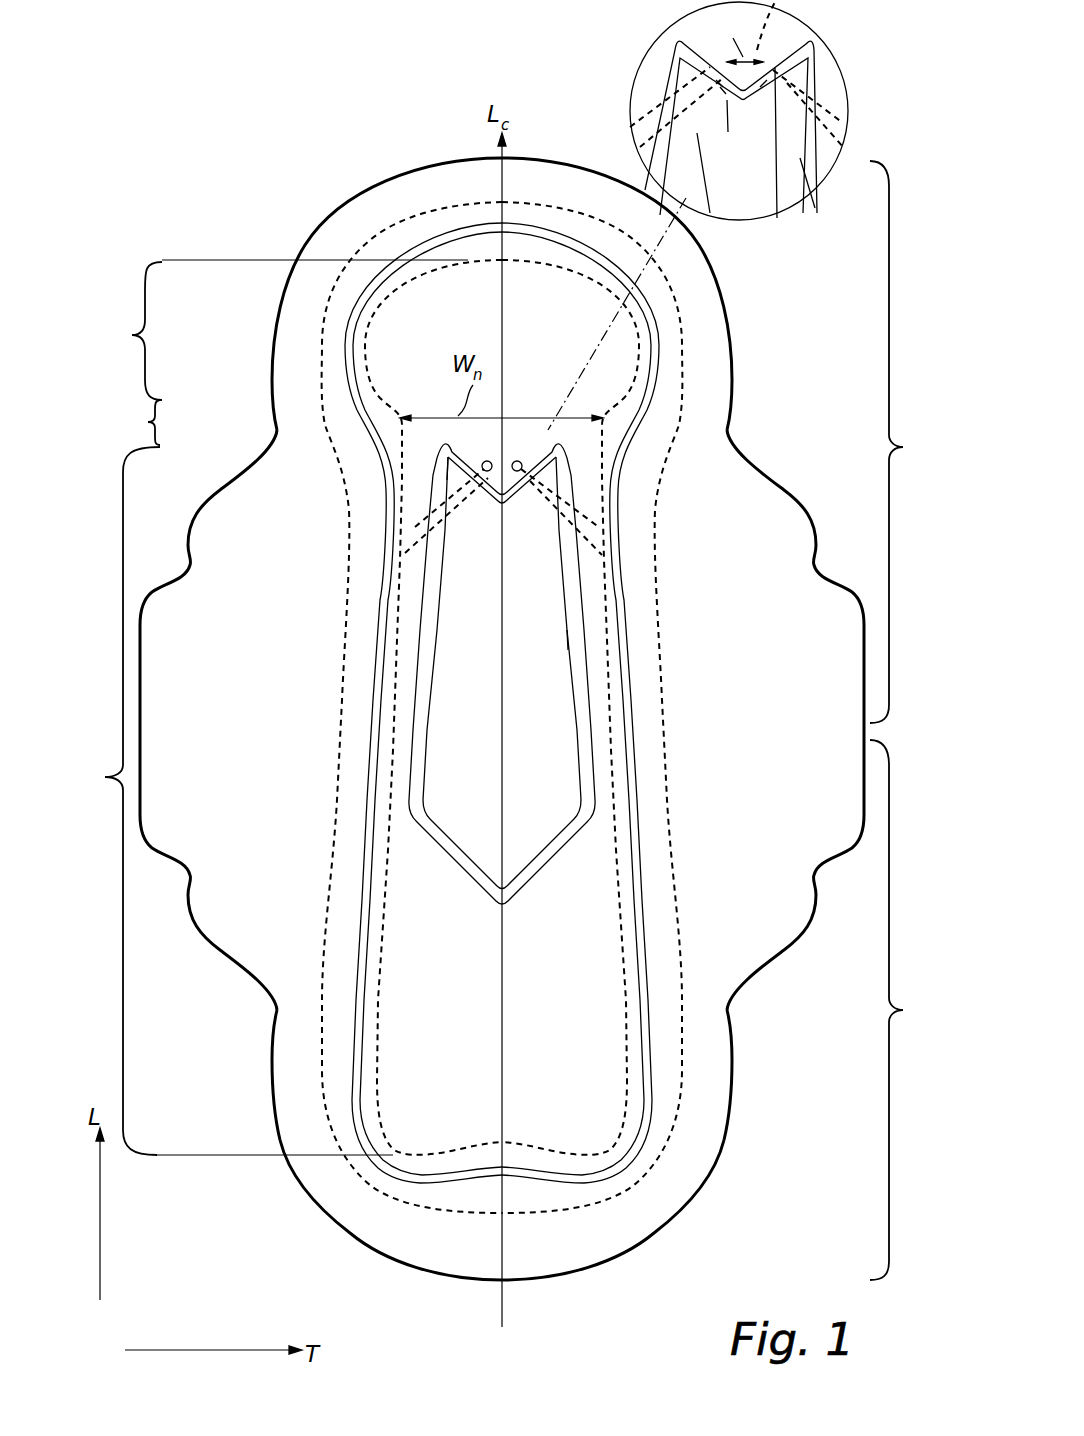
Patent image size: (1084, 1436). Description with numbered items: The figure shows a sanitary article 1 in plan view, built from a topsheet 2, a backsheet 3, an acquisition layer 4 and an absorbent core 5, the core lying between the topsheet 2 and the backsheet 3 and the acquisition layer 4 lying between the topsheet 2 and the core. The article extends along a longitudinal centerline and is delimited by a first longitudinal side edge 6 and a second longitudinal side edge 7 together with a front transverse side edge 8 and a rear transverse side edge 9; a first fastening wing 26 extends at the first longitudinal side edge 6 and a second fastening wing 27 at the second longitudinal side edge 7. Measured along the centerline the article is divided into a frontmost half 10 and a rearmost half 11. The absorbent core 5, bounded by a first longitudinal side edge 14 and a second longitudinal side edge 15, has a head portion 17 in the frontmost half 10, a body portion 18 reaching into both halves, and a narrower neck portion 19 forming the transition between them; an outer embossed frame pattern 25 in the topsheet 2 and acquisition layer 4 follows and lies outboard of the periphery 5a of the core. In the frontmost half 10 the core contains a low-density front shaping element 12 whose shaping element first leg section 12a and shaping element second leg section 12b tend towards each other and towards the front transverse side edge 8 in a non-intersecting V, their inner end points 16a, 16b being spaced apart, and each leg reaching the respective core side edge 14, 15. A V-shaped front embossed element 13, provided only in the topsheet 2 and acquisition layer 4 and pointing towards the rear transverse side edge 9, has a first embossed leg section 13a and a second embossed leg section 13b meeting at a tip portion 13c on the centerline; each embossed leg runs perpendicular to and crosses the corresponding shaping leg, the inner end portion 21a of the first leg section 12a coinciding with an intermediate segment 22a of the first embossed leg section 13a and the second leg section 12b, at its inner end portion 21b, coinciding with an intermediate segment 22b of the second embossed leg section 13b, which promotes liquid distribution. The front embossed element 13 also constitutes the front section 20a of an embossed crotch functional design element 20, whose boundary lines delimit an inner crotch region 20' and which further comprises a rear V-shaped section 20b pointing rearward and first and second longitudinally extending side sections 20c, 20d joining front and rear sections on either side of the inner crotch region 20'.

The sanitary article 1 is at (855, 311).
The topsheet 2 is at (534, 732).
The backsheet 3 is at (685, 447).
The acquisition layer 4 is at (673, 374).
The absorbent core 5 is at (573, 719).
The periphery of the absorbent core 5a is at (627, 1123).
The first longitudinal side edge 6 is at (729, 1017).
The second longitudinal side edge 7 is at (273, 1052).
The front transverse side edge 8 is at (462, 157).
The rear transverse side edge 9 is at (520, 1281).
The frontmost half 10 is at (903, 442).
The rearmost half 11 is at (903, 1010).
The low-density front shaping element 12 is at (738, 131).
The shaping element first leg section 12a is at (805, 78).
The shaping element second leg section 12b is at (415, 527).
The V-shaped front embossed element 13 is at (526, 359).
The first embossed leg section 13a is at (516, 505).
The second embossed leg section 13b is at (472, 488).
The tip portion 13c is at (495, 508).
The first longitudinal side edge of the absorbent core 14 is at (612, 658).
The second longitudinal side edge of the absorbent core 15 is at (395, 663).
The inner end point of the shaping element first leg section 16a is at (778, 4).
The inner end point of the shaping element second leg section 16b is at (710, 32).
The head portion 17 is at (123, 331).
The body portion 18 is at (110, 801).
The neck portion 19 is at (136, 422).
The embossed crotch functional design element 20 is at (509, 521).
The inner crotch region 20' is at (649, 698).
The front section 20a is at (463, 493).
The rear V-shaped section 20b is at (548, 858).
The first longitudinally extending side section 20c is at (583, 648).
The second longitudinally extending side section 20d is at (423, 729).
The inner end portion of the shaping element first leg section 21a is at (775, 50).
The embossed line branch 21b is at (717, 58).
The intermediate segment of the first embossed leg section 22a is at (778, 218).
The intermediate segment of the second embossed leg section 22b is at (668, 78).
The outer embossed frame pattern 25 is at (655, 327).
The first fastening wing 26 is at (813, 684).
The second fastening wing 27 is at (183, 760).